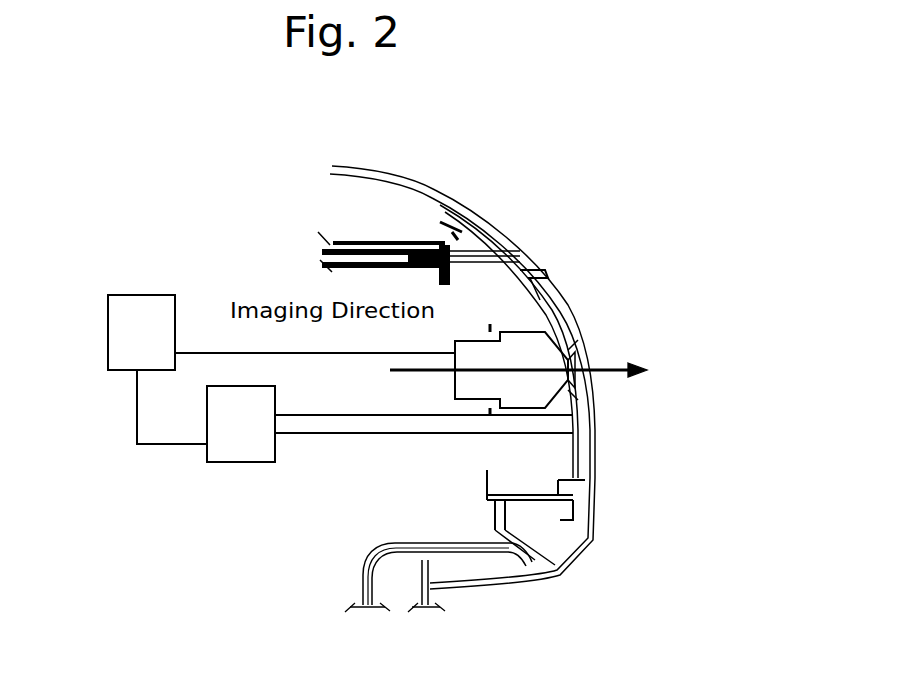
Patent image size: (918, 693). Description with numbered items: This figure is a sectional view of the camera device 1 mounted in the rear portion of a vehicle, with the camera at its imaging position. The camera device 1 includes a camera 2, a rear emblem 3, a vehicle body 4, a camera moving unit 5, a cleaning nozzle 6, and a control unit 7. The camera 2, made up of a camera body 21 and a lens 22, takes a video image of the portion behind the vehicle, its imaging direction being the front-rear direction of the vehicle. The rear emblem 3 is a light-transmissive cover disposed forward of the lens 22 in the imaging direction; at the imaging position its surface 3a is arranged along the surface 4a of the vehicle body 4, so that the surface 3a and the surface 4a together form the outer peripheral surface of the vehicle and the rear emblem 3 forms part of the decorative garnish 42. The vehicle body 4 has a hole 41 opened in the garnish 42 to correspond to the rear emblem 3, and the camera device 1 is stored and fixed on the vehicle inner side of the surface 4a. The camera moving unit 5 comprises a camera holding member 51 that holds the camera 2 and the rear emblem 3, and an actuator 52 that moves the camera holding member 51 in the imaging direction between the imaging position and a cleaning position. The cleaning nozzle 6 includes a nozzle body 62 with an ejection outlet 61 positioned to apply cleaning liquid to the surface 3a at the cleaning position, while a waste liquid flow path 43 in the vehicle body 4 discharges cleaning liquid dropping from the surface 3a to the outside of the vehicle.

The camera device 1 is at (137, 226).
The control unit 7 is at (145, 323).
The camera moving unit 5 is at (236, 495).
The actuator 52 is at (220, 445).
The camera holding member 51 is at (362, 438).
The camera 2 is at (460, 419).
The camera body 21 is at (472, 392).
The lens 22 is at (582, 352).
The cleaning nozzle 6 is at (419, 189).
The nozzle body 62 is at (452, 228).
The ejection outlet 61 is at (553, 268).
The vehicle body 4 is at (499, 304).
The surface of the vehicle body 4a is at (499, 304).
The garnish 42 is at (505, 238).
The rear emblem 3 is at (554, 377).
The surface of the rear emblem 3a is at (590, 395).
The hole 41 is at (590, 473).
The waste liquid flow path 43 is at (472, 552).